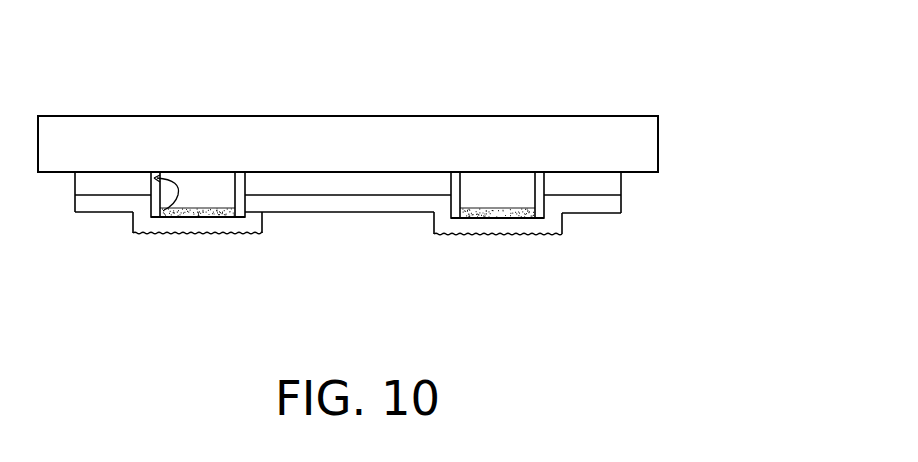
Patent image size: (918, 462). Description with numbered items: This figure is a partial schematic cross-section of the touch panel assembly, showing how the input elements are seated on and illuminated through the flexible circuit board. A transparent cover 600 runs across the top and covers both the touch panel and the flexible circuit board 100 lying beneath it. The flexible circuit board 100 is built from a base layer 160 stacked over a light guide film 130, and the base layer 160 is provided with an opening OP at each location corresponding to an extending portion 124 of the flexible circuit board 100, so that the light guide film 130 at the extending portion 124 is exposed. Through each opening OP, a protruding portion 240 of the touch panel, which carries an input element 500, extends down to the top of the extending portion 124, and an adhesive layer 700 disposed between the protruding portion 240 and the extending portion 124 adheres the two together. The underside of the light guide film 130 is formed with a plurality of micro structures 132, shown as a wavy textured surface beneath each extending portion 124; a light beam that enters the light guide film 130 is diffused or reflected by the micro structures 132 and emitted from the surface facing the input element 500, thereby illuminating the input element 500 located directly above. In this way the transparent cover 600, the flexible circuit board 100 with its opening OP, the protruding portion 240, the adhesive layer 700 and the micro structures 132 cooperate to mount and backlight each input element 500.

The transparent cover 600 is at (630, 145).
The flexible circuit board 100 is at (435, 215).
The base layer 160 is at (600, 184).
The light guide film 130 is at (600, 204).
The micro structures 132 is at (519, 236).
The extending portion 124 is at (183, 235).
The input element 500 is at (493, 176).
The protruding portion 240 is at (505, 192).
The adhesive layer 700 is at (445, 213).
The opening OP is at (152, 213).